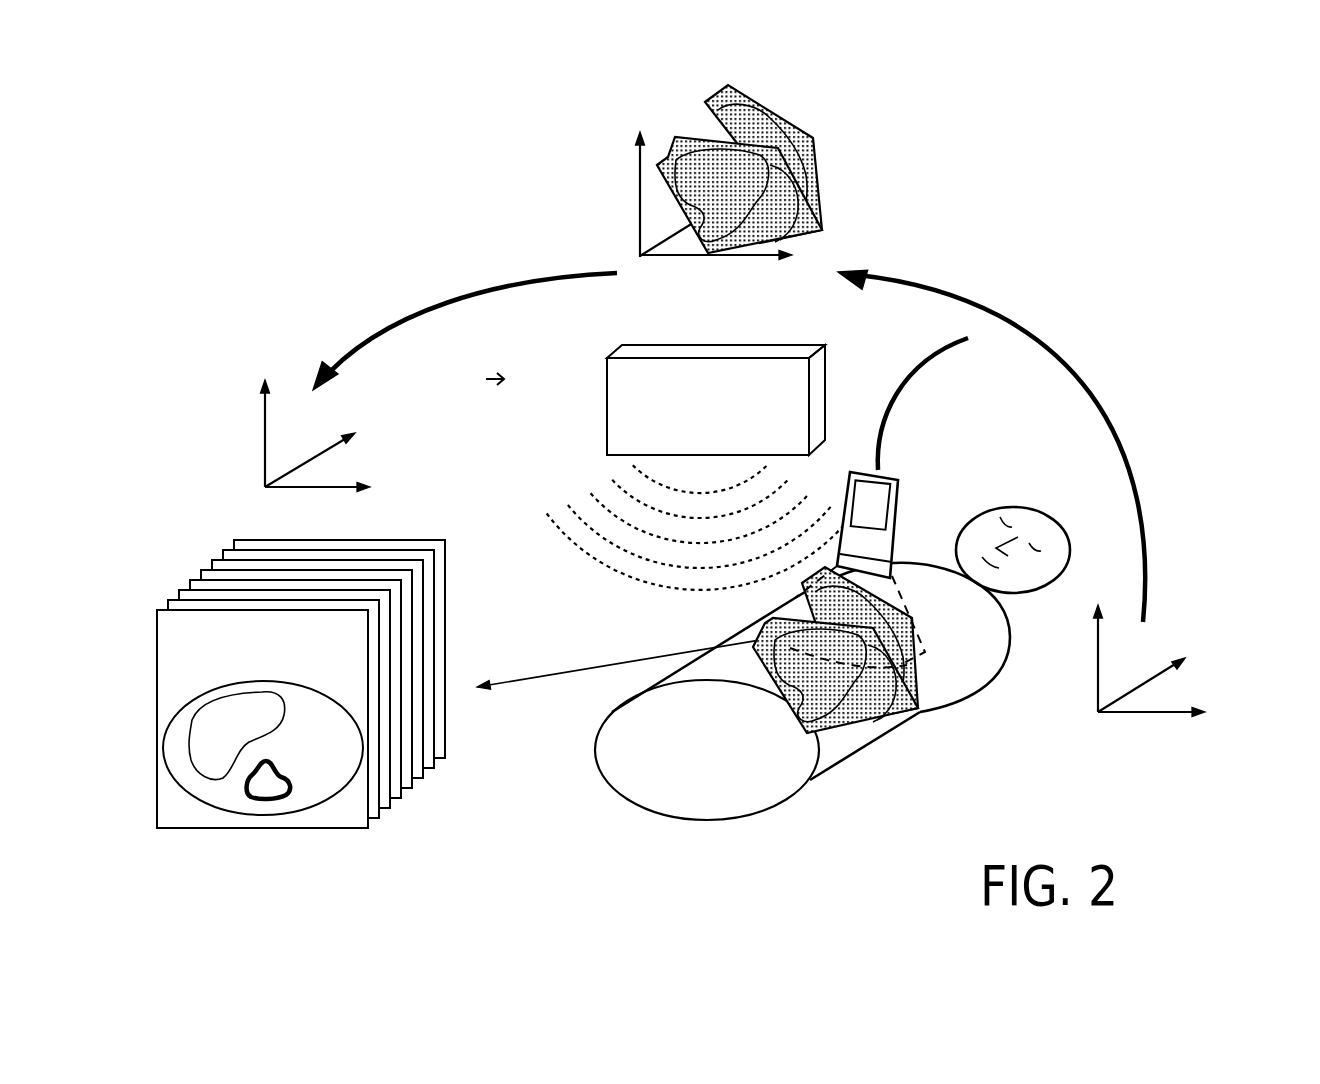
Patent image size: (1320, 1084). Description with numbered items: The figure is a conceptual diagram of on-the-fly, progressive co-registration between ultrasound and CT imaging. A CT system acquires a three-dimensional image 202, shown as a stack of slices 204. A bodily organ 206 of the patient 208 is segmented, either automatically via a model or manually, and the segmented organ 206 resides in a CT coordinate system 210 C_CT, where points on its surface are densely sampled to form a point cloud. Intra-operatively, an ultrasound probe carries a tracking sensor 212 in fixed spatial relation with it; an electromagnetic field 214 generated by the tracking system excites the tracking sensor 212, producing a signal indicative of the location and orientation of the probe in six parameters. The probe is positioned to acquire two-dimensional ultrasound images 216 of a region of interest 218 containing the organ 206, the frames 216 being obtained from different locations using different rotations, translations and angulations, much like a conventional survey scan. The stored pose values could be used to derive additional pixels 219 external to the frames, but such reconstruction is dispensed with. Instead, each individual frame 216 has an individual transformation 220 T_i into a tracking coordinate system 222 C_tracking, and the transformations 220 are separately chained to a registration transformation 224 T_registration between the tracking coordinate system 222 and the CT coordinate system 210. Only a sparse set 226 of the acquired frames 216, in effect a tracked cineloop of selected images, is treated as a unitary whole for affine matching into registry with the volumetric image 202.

The 3D image 202 is at (311, 834).
The slices 204 is at (190, 582).
The bodily organ 206 is at (208, 783).
The patient 208 is at (683, 798).
The CT coordinate system 210 is at (294, 512).
The tracking sensor 212 is at (883, 502).
The field 214 is at (590, 578).
The 2DUS images 216 is at (935, 688).
The region of interest 218 is at (867, 775).
The additional pixels 219 is at (795, 613).
The transformation 220 is at (1229, 405).
The tracking coordinate system 222 is at (670, 311).
The transformation 224 is at (487, 320).
The sparse set 226 is at (840, 163).